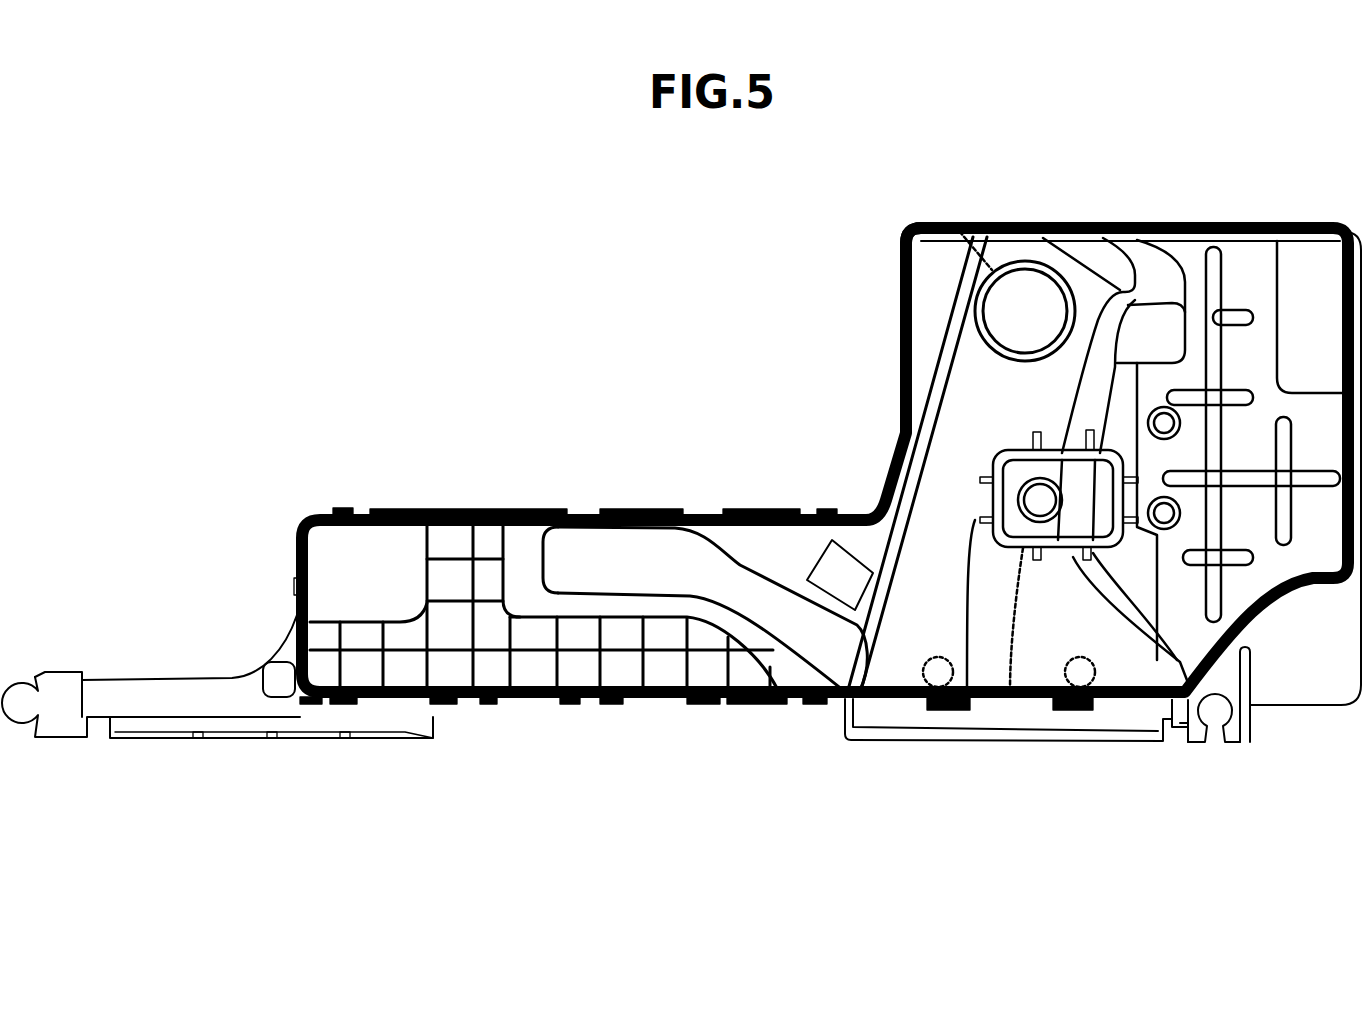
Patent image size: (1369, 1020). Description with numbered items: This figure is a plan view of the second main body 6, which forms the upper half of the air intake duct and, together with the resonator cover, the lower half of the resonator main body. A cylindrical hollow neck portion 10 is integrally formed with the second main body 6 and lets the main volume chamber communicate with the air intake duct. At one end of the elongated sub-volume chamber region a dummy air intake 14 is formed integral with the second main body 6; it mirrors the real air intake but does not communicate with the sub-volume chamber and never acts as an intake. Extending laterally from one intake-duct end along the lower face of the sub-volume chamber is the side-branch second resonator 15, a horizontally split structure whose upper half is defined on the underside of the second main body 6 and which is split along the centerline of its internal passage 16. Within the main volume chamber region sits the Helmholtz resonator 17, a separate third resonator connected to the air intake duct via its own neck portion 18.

The second main body 6 is at (530, 493).
The neck portion 10 is at (954, 222).
The dummy air intake 14 is at (233, 740).
The second resonator 15 is at (762, 509).
The internal passage 16 is at (621, 506).
The Helmholtz resonator 17 is at (1010, 699).
The neck portion 18 is at (1018, 497).